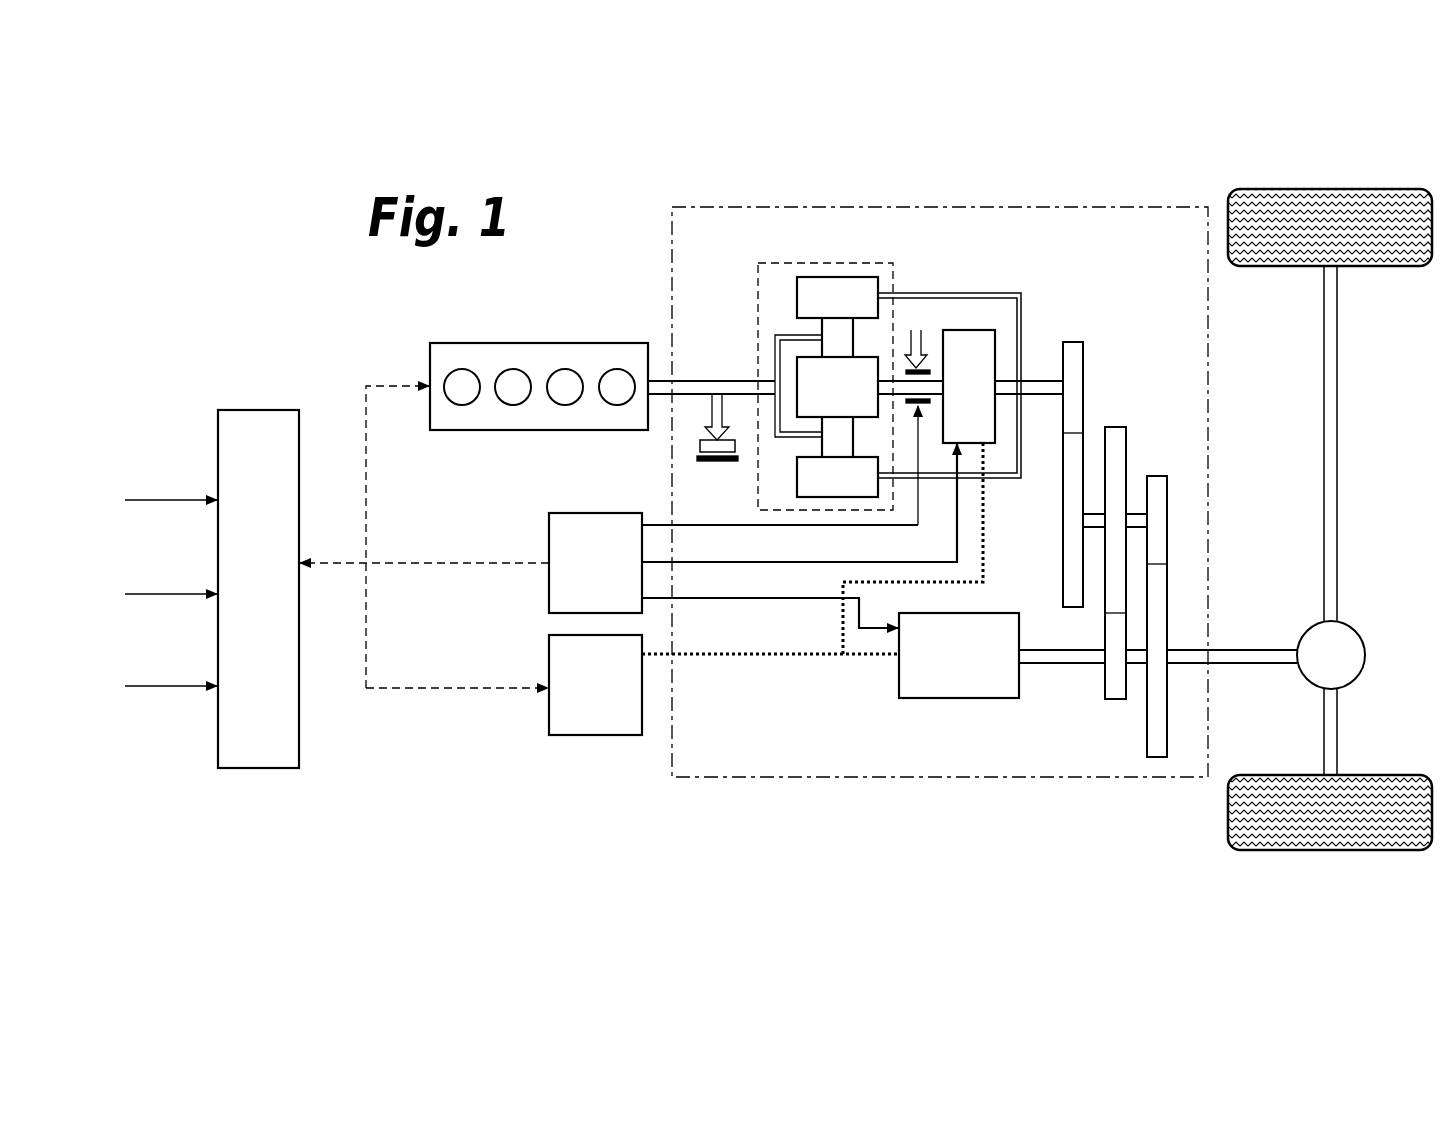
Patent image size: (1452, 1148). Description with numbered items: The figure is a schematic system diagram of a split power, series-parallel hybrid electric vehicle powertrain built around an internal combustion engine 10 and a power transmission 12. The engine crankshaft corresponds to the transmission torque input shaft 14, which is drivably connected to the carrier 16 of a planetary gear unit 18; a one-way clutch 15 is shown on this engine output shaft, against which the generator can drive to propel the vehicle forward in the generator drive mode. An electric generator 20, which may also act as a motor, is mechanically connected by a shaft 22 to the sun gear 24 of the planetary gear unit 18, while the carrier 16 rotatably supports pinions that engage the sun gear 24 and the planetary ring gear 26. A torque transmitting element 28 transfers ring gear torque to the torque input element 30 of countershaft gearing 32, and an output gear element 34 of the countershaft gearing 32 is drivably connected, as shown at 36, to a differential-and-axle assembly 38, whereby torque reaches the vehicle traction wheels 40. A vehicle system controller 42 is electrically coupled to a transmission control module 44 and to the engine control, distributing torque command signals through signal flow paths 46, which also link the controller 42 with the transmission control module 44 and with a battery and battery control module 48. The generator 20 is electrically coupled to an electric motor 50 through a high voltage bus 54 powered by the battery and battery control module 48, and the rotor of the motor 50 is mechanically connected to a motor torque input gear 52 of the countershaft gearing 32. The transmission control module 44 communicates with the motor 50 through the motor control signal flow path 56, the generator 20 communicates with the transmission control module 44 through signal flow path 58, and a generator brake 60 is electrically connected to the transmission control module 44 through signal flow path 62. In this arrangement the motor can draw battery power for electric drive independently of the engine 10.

The internal combustion engine 10 is at (572, 430).
The power transmission 12 is at (1131, 203).
The transmission torque input shaft 14 is at (700, 380).
The one-way clutch 15 is at (700, 446).
The carrier 16 is at (788, 335).
The planetary gear unit 18 is at (889, 262).
The electric generator 20 is at (997, 343).
The shaft 22 is at (884, 398).
The sun gear 24 is at (797, 373).
The planetary ring gear 26 is at (797, 285).
The torque transmitting element 28 is at (1000, 479).
The torque input element 30 is at (1083, 370).
The countershaft gearing 32 is at (1138, 507).
The output gear element 34 is at (1147, 724).
The drivable connection 36 is at (1254, 665).
The differential-and-axle assembly 38 is at (1299, 626).
The vehicle traction wheels 40 is at (1358, 189).
The vehicle system controller 42 is at (270, 410).
The transmission control module 44 is at (593, 513).
The signal flow paths 46 is at (434, 568).
The battery and battery control module 48 is at (593, 735).
The electric motor 50 is at (965, 698).
The motor torque input gear 52 is at (1105, 682).
The high voltage bus 54 is at (830, 657).
The motor control signal flow path 56 is at (826, 600).
The signal flow path 58 is at (928, 560).
The generator brake 60 is at (928, 368).
The signal flow path 62 is at (745, 527).